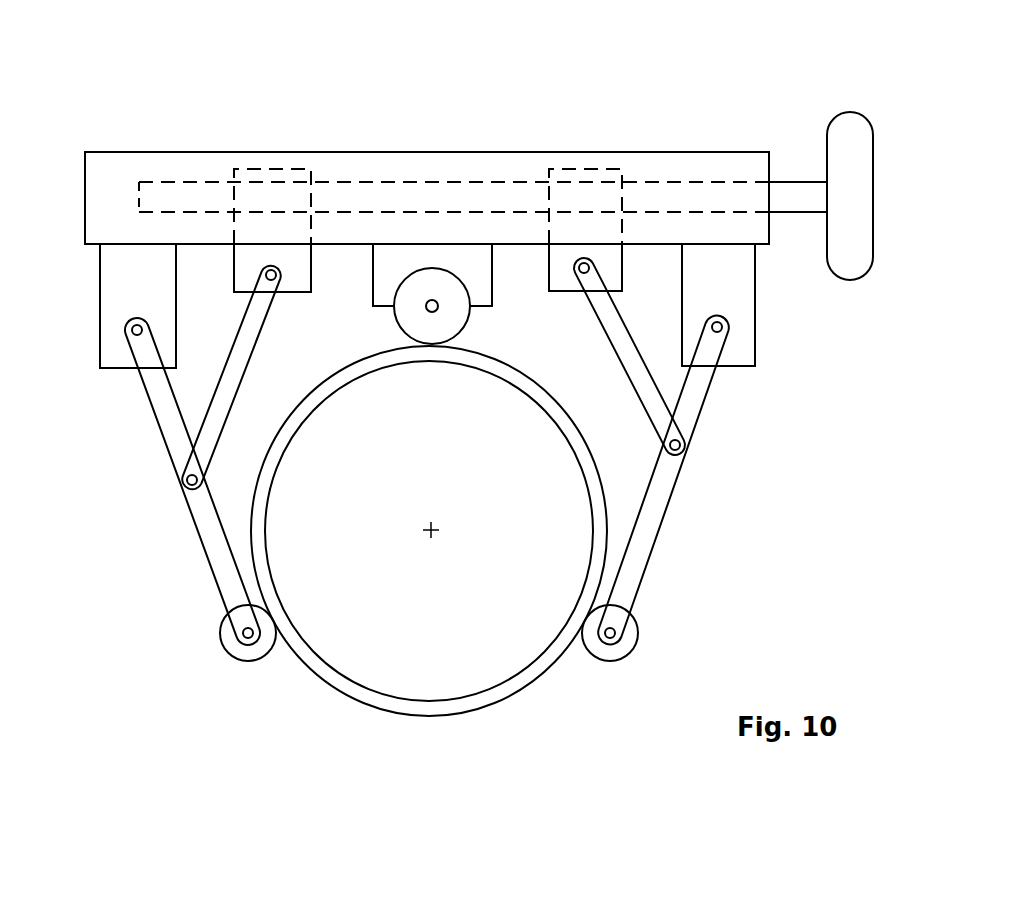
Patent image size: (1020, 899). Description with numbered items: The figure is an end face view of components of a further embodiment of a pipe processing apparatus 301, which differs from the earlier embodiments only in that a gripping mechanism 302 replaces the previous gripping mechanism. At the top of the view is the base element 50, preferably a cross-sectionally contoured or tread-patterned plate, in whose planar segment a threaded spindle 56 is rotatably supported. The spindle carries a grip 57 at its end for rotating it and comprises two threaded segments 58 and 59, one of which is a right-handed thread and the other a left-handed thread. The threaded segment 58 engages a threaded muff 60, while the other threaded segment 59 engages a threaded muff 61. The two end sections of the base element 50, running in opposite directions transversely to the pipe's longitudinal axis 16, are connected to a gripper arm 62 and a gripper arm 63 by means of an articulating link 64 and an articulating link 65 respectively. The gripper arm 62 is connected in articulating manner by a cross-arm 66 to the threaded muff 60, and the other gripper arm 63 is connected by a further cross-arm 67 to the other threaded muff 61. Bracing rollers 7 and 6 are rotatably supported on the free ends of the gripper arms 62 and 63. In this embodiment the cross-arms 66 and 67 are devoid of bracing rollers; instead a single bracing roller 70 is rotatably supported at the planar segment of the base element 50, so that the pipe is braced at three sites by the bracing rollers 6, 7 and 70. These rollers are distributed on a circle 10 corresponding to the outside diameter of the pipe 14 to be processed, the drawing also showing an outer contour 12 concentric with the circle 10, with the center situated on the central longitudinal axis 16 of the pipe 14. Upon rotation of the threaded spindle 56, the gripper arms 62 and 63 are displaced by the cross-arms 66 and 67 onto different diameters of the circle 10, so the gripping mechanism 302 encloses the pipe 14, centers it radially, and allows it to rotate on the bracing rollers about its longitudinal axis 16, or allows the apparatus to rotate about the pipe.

The pipe processing apparatus 301 is at (789, 80).
The gripping mechanism 302 is at (735, 452).
The base element 50 is at (129, 170).
The threaded spindle 56 is at (686, 197).
The grip 57 is at (853, 135).
The threaded segment 58 is at (327, 183).
The threaded segment 59 is at (637, 182).
The threaded muff 60 is at (288, 280).
The threaded muff 61 is at (577, 280).
The gripper arm 62 is at (205, 513).
The gripper arm 63 is at (657, 500).
The articulating link 64 is at (130, 334).
The articulating link 65 is at (725, 331).
The cross-arm 66 is at (232, 378).
The cross-arm 67 is at (622, 348).
The bracing roller 70 is at (455, 313).
The bracing roller 7 is at (250, 655).
The bracing roller 6 is at (607, 655).
The circle 10 is at (459, 719).
The outer ring 12 is at (494, 708).
The pipe 14 is at (519, 681).
The central longitudinal axis 16 is at (436, 537).